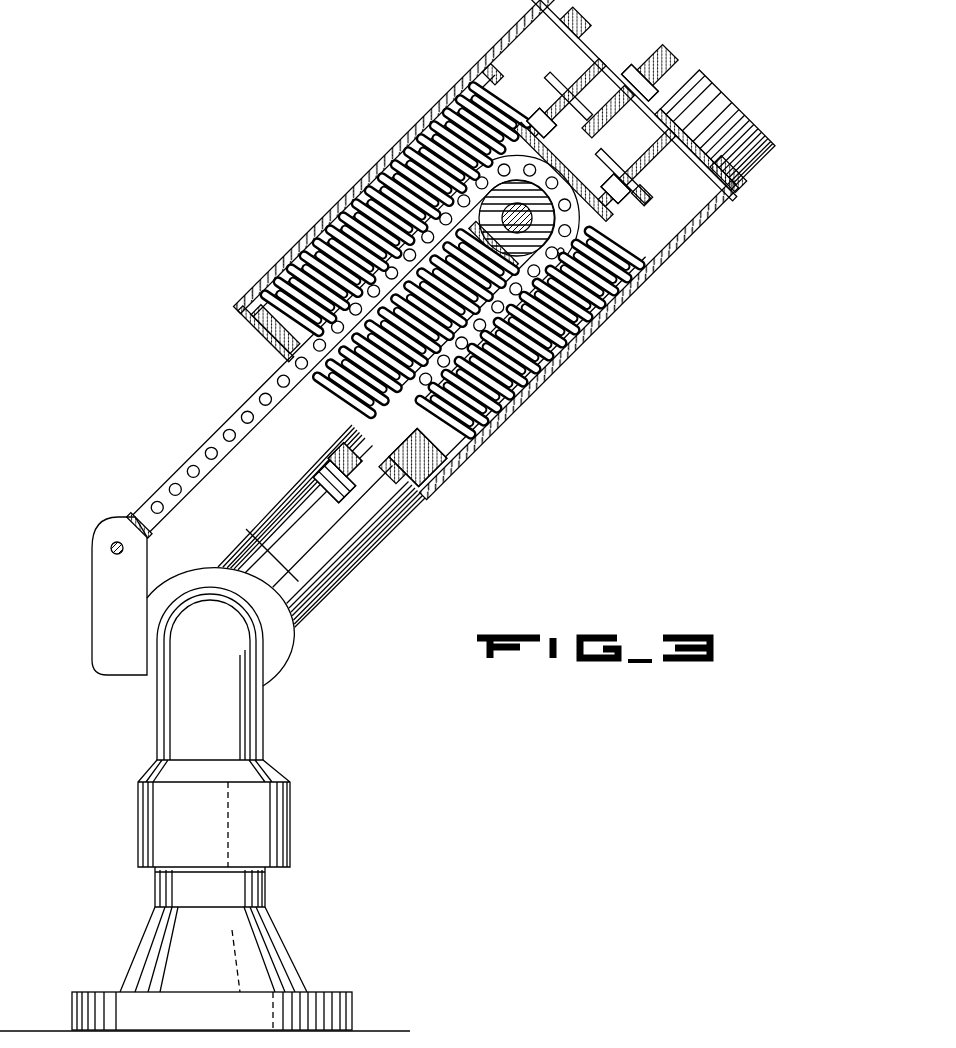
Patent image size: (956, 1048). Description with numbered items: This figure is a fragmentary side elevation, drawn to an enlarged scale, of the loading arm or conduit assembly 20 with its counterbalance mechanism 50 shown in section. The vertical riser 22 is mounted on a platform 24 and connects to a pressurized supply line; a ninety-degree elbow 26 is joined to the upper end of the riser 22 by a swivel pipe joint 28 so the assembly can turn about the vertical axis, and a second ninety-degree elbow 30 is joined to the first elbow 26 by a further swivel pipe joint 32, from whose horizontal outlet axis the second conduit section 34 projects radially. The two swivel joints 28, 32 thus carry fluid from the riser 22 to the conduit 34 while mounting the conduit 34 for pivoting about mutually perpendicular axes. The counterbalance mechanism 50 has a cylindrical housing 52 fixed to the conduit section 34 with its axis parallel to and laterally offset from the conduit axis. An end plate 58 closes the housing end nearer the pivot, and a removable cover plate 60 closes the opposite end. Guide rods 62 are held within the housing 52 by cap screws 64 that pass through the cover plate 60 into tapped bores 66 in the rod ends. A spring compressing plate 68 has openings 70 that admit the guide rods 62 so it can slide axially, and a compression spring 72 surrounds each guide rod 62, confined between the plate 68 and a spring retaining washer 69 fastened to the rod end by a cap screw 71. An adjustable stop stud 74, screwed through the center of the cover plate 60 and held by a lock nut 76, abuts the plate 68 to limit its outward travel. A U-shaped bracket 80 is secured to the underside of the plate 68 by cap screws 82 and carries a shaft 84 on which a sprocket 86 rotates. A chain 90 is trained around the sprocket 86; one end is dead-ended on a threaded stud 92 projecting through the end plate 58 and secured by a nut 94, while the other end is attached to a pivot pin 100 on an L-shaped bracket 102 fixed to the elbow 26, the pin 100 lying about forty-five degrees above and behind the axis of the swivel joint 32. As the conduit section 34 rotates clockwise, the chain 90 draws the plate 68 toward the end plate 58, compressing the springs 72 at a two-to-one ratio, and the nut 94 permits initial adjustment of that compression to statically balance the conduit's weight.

The loading arm or conduit assembly 20 is at (462, 515).
The riser 22 is at (233, 886).
The platform 24 is at (384, 1027).
The 90° elbow 26 is at (188, 699).
The swivel pipe joint 28 is at (268, 818).
The second 90° elbow 30 is at (302, 625).
The swivel pipe joint 32 is at (290, 657).
The second conduit section 34 is at (380, 557).
The counterbalance mechanism 50 is at (478, 362).
The cylindrical housing 52 is at (298, 243).
The end plate 58 is at (238, 318).
The removable cover plate 60 is at (592, 56).
The guide rods 62 is at (600, 114).
The cap screws 64 is at (586, 25).
The tapped bores 66 is at (557, 87).
The spring compressing plate 68 is at (607, 161).
The spring retaining washer 69 is at (275, 300).
The openings 70 is at (495, 76).
The cap screw 71 is at (255, 340).
The compression spring 72 is at (370, 196).
The adjustable stop stud 74 is at (676, 56).
The lock nut 76 is at (641, 83).
The U-shaped bracket 80 is at (528, 162).
The cap screws 82 is at (543, 116).
The shaft 84 is at (514, 203).
The sprocket 86 is at (566, 250).
The chain 90 is at (220, 446).
The threaded stud 92 is at (330, 485).
The nut 94 is at (338, 452).
The pivot pin 100 is at (110, 547).
The L-shaped bracket 102 is at (100, 641).